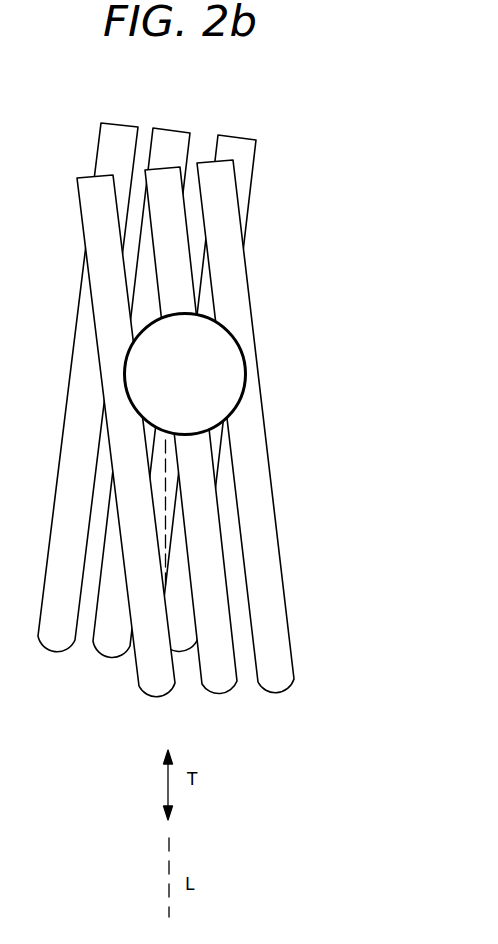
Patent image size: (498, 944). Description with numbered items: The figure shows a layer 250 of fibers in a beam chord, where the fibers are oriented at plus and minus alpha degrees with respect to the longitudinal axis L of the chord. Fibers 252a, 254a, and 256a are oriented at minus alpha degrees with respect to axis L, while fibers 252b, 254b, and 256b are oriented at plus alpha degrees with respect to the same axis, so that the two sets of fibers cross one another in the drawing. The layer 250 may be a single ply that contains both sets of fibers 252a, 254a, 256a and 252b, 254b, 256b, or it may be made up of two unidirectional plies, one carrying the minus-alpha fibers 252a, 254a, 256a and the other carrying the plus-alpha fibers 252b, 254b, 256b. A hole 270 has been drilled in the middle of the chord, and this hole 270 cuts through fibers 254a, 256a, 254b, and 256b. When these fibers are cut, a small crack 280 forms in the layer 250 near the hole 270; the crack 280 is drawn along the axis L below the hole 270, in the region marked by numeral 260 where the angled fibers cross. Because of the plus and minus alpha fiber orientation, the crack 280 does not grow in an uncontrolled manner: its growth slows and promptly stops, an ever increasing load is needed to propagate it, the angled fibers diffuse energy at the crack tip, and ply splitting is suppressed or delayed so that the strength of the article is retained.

The layer 250 is at (189, 444).
The fiber 252a is at (117, 452).
The fiber 252b is at (87, 371).
The fiber 254a is at (231, 458).
The fiber 254b is at (184, 365).
The fiber 256a is at (276, 438).
The fiber 256b is at (241, 378).
The fiber crossing point 260 is at (263, 478).
The hole 270 is at (201, 384).
The crack 280 is at (263, 504).